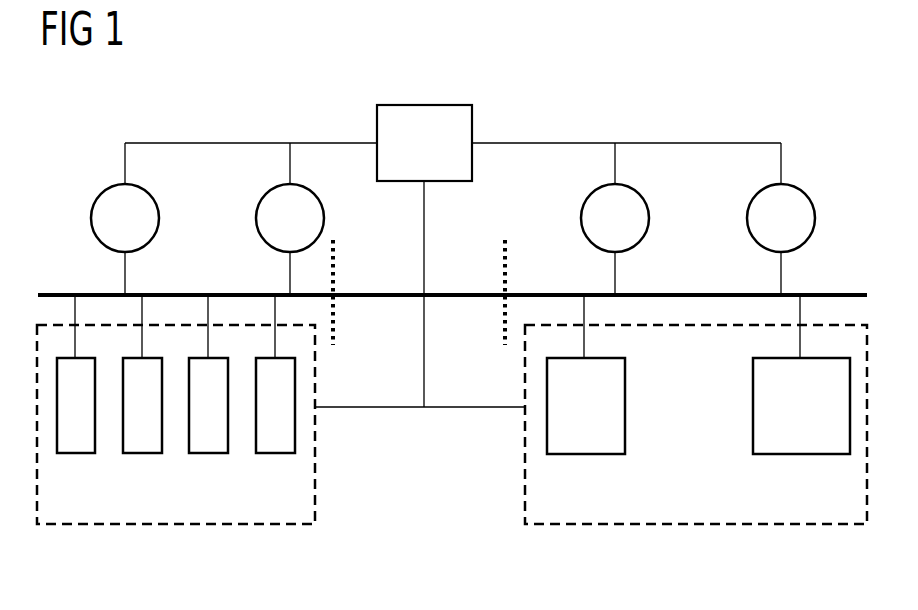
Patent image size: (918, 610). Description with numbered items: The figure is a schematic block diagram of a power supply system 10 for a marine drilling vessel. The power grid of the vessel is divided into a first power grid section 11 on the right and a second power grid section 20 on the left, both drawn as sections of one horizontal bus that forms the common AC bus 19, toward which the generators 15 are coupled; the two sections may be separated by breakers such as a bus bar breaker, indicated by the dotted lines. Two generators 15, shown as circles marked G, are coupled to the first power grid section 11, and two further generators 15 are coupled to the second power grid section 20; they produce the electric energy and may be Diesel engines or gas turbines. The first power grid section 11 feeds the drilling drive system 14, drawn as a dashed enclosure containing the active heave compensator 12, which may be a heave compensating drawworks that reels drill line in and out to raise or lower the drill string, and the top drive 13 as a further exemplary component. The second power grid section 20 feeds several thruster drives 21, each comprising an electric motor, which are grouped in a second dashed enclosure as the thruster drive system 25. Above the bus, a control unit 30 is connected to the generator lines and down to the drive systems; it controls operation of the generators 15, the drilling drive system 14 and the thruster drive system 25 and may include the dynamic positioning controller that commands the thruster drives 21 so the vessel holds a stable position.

The power supply system 10 is at (537, 93).
The first power grid section 11 is at (842, 293).
The active heave compensator 12 is at (590, 457).
The top drive 13 is at (801, 457).
The drilling drive system 14 is at (694, 527).
The generators 15 is at (256, 218).
The common AC bus 19 is at (367, 293).
The second power grid section 20 is at (57, 293).
The thruster drives 21 is at (138, 453).
The thruster drive system 25 is at (190, 527).
The control unit 30 is at (424, 105).